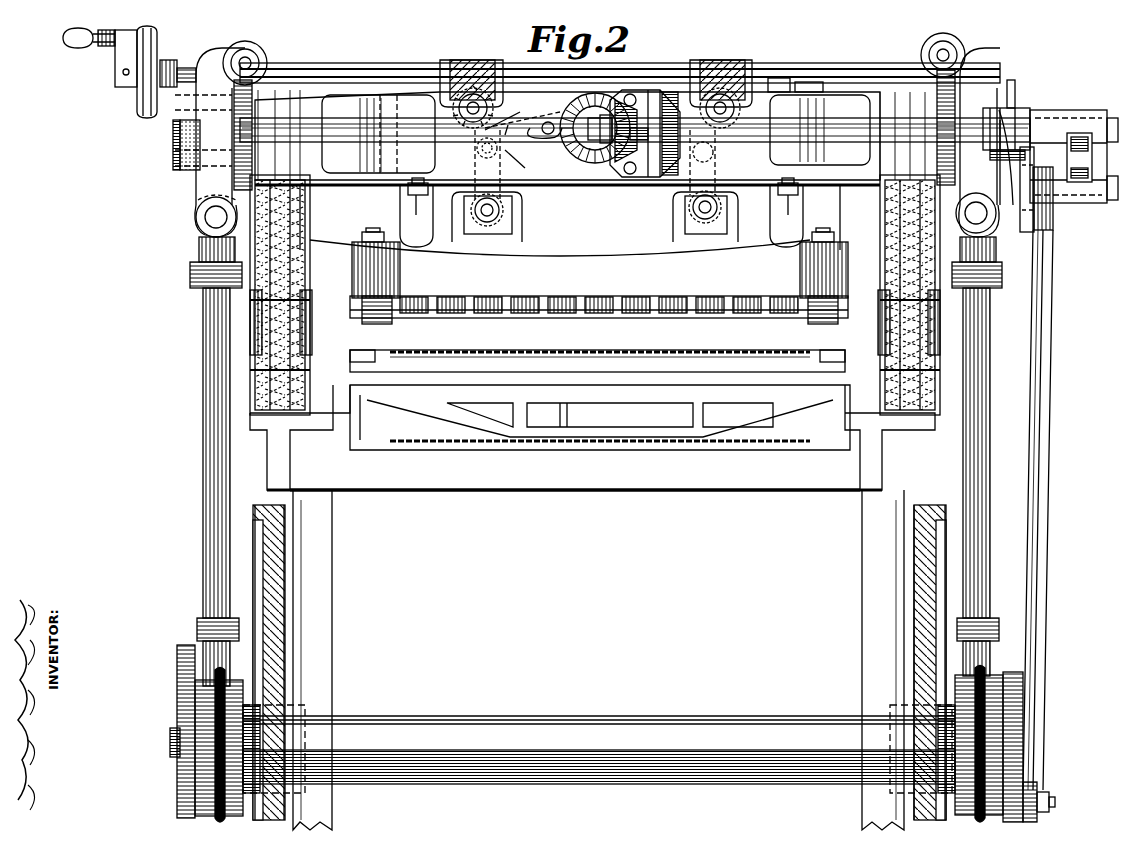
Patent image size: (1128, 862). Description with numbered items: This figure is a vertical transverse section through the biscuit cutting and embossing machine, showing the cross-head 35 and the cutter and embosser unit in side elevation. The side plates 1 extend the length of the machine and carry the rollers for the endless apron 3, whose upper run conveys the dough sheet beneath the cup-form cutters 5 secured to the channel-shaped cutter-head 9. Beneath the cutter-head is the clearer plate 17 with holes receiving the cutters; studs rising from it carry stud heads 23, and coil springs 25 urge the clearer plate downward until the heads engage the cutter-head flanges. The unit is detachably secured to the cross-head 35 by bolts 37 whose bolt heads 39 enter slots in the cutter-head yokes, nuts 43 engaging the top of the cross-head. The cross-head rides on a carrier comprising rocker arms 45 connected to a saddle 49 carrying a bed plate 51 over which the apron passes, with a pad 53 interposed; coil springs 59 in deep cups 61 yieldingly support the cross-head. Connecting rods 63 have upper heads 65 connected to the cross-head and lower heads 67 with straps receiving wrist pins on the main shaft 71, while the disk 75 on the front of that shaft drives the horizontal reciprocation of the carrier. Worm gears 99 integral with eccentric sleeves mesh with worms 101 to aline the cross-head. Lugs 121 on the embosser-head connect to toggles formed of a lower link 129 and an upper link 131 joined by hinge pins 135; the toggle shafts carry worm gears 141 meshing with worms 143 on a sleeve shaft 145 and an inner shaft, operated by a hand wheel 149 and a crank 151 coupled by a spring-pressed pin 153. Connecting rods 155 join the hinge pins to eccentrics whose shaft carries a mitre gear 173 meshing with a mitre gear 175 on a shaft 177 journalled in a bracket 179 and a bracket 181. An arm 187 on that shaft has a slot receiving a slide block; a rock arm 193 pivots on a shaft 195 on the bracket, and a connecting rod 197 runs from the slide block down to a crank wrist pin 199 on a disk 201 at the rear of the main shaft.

The side plates 1 is at (272, 552).
The endless apron 3 is at (528, 352).
The cutters 5 is at (480, 314).
The cutter-head 9 is at (350, 252).
The clearer plate 17 is at (590, 318).
The stud heads 23 is at (370, 230).
The coil springs 25 is at (376, 318).
The cross-head 35 is at (395, 180).
The bolts 37 is at (416, 178).
The bolt heads 39 is at (594, 209).
The nuts 43 is at (790, 80).
The rocker arms 45 is at (326, 590).
The saddle 49 is at (489, 490).
The bed plate 51 is at (426, 410).
The pad 53 is at (640, 360).
The coil springs 59 is at (306, 350).
The cups 61 is at (312, 312).
The connecting rods 63 is at (205, 332).
The connecting rod heads 65 is at (205, 186).
The connecting rod heads 67 is at (195, 690).
The main shaft 71 is at (548, 730).
The disk 75 is at (178, 660).
The worm gears 99 is at (232, 143).
The worms 101 is at (264, 58).
The lugs 121 is at (515, 220).
The lower link 129 is at (500, 205).
The upper link 131 is at (468, 132).
The hinge pins 135 is at (498, 150).
The worm gears 141 is at (494, 110).
The worms 143 is at (470, 60).
The sleeve shaft 145 is at (330, 66).
The hand wheel 149 is at (126, 60).
The crank 151 is at (62, 40).
The spring-pressed pin 153 is at (158, 40).
The connecting rods 155 is at (533, 152).
The mitre gear 173 is at (592, 165).
The mitre gear 175 is at (630, 165).
The shaft 177 is at (855, 150).
The bracket 179 is at (648, 90).
The bracket 181 is at (1018, 112).
The arm 187 is at (1036, 232).
The rock arm 193 is at (1092, 160).
The shaft 195 is at (1074, 145).
The connecting rod 197 is at (1040, 395).
The crank wrist pin 199 is at (1050, 800).
The disk 201 is at (1025, 718).